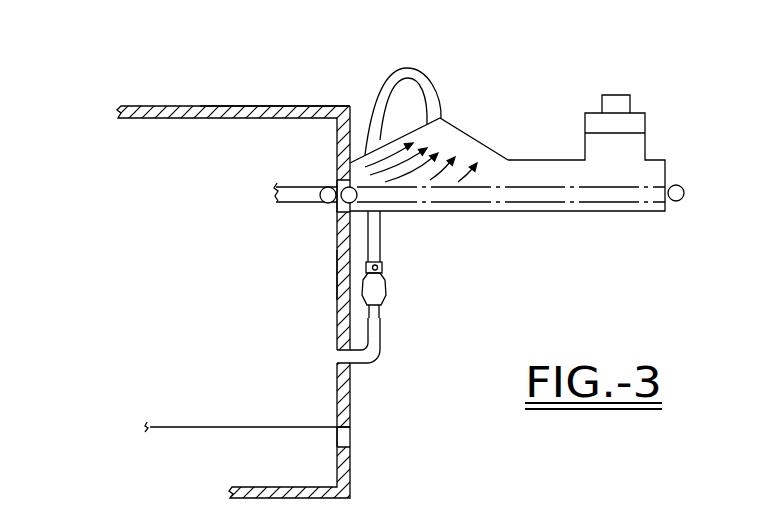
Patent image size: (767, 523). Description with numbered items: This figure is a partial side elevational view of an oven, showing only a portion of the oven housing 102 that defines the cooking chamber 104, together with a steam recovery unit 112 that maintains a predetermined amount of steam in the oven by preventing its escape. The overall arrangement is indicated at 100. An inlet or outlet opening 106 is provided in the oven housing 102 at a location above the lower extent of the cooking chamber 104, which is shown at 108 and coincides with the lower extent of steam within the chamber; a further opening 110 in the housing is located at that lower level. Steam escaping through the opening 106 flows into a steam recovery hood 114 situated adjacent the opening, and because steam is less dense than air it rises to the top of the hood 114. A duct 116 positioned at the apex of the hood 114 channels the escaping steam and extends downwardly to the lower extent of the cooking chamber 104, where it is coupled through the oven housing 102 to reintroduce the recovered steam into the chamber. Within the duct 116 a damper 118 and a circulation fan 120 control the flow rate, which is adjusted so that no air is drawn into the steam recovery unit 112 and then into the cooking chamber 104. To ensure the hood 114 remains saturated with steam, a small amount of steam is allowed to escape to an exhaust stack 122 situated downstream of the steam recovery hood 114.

The mounting structure / wall 100 is at (209, 100).
The oven housing 102 is at (255, 106).
The cooking chamber 104 is at (235, 238).
The inlet or outlet opening 106 is at (329, 171).
The lower extent of cooking chamber 108 is at (218, 427).
The lower opening 110 is at (318, 442).
The steam recovery unit 112 is at (510, 137).
The steam recovery hood 114 is at (455, 130).
The duct 116 is at (403, 68).
The damper 118 is at (383, 267).
The circulation fan 120 is at (386, 295).
The exhaust stack 122 is at (645, 127).